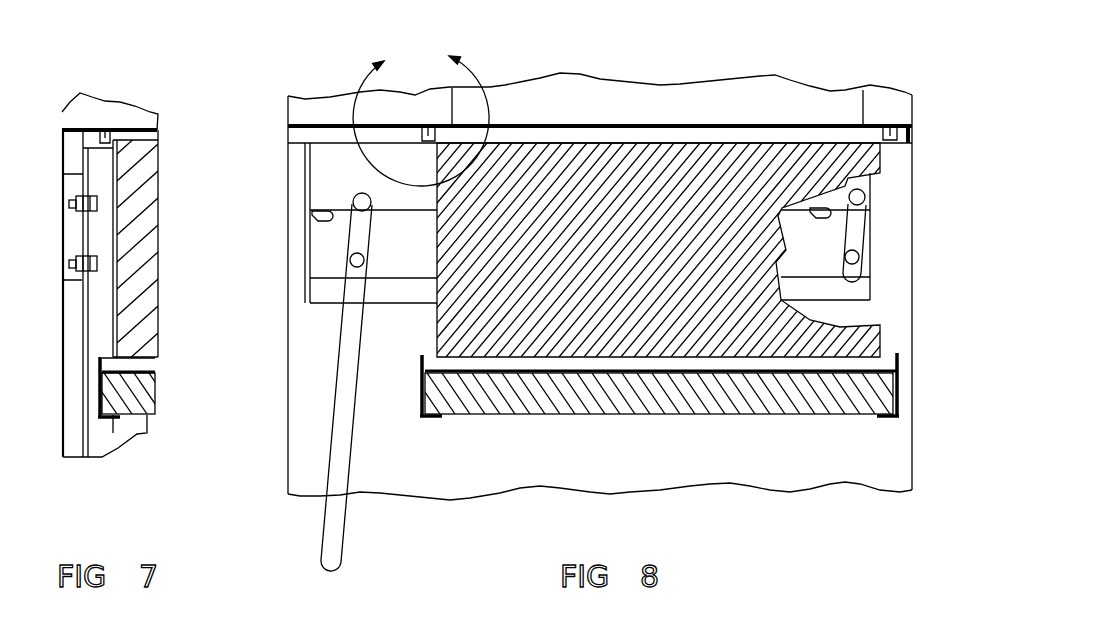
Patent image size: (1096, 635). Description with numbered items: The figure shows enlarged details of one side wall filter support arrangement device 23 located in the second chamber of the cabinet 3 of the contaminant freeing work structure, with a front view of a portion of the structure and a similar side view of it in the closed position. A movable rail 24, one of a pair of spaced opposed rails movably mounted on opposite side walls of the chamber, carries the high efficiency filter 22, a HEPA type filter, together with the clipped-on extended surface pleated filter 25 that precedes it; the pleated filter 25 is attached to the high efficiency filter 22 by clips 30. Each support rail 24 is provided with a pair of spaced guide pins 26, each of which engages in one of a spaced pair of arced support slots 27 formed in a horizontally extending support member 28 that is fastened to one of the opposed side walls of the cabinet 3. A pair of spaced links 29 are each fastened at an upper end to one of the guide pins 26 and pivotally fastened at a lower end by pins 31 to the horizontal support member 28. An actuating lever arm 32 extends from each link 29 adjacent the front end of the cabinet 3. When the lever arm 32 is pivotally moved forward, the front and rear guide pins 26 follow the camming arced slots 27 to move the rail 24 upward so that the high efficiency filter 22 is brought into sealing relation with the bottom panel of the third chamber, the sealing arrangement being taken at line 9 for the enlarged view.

In FIG. 7, the cabinet 3 is at (62, 118).
In FIG. 8, the cabinet 3 is at (913, 107).
In FIG. 8, the line 9— 9 is at (421, 111).
In FIG. 8, the high efficiency filter 22 is at (680, 239).
In FIG. 7, the side wall filter support arrangement device 23 is at (73, 300).
In FIG. 8, the side wall filter support arrangement device 23 is at (300, 281).
In FIG. 8, the movable rail 24 is at (335, 158).
In FIG. 7, the extended surface pleated filter 25 is at (143, 397).
In FIG. 8, the extended surface pleated filter 25 is at (618, 395).
In FIG. 8, the guide pin 26 is at (353, 200).
In FIG. 8, the arced support slot 27 is at (312, 222).
In FIG. 7, the horizontally extending support member 28 is at (71, 173).
In FIG. 8, the horizontally extending support member 28 is at (323, 250).
In FIG. 8, the link 29 is at (364, 228).
In FIG. 7, the clip 30 is at (103, 420).
In FIG. 8, the clip 30 is at (430, 418).
In FIG. 8, the pin 31 is at (355, 266).
In FIG. 8, the actuating lever arm 32 is at (343, 433).